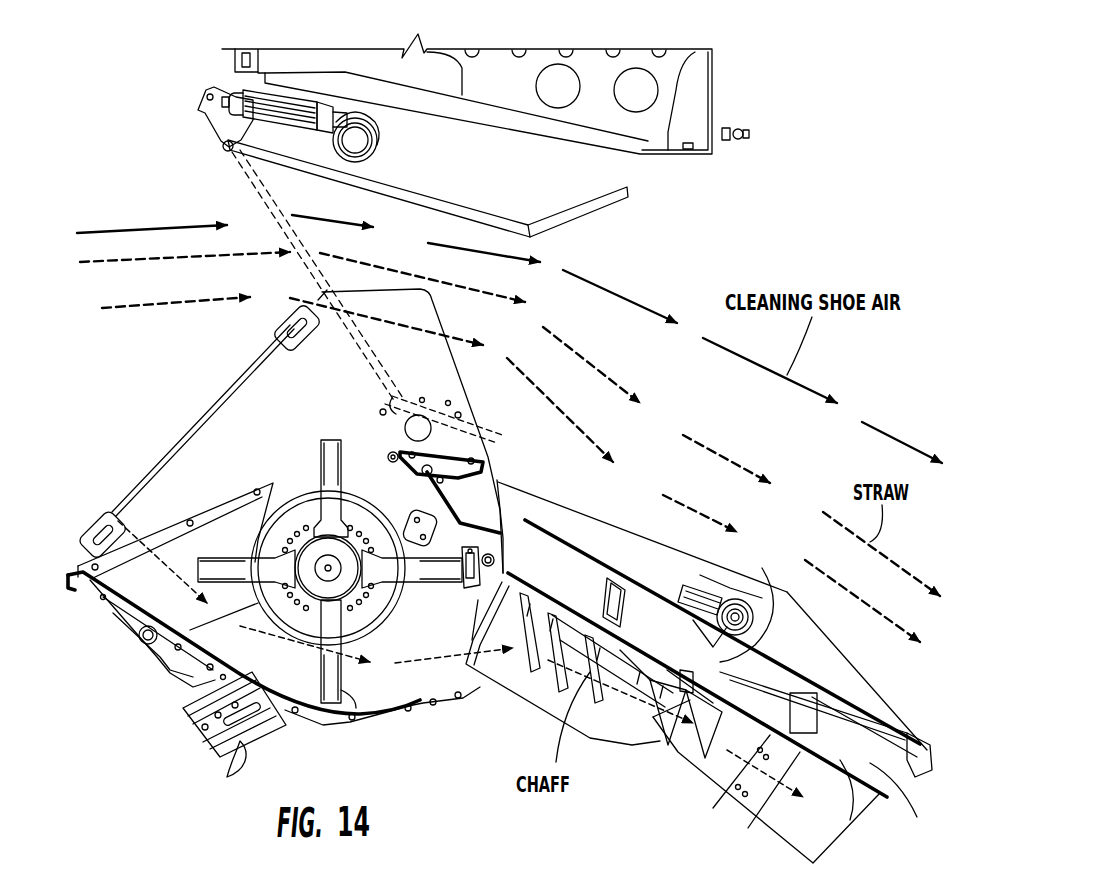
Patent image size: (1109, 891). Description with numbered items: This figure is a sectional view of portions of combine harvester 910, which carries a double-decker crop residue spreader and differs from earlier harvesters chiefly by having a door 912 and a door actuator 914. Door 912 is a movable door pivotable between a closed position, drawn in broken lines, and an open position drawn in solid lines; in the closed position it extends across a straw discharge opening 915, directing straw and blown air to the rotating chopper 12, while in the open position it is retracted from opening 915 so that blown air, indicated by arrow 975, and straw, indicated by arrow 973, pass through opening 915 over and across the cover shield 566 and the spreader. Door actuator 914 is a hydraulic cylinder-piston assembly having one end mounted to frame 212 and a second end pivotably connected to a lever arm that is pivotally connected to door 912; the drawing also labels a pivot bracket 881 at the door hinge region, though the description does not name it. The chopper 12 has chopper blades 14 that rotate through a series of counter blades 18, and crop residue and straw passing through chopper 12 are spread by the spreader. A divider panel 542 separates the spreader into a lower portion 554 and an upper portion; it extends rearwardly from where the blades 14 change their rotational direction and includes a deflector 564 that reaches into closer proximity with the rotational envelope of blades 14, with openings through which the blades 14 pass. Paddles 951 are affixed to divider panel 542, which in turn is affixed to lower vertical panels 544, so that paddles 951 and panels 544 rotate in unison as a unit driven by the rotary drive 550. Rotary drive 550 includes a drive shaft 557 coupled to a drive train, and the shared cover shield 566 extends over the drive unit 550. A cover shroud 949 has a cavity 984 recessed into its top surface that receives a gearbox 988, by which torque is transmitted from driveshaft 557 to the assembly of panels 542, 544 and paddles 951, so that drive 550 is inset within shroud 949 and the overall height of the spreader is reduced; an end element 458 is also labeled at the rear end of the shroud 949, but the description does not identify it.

The combine harvester 910 is at (183, 40).
The door actuator 914 is at (257, 93).
The pivot bracket 881 is at (217, 110).
The door 912 is at (258, 220).
The frame 212 is at (380, 154).
The straw discharge opening 915 is at (398, 240).
The arrow (straw flow) 973 is at (177, 306).
The arrow (blown air flow) 975 is at (900, 436).
The rotating chopper 12 is at (317, 450).
The chopper blades 14 is at (337, 693).
The counter blades 18 is at (229, 773).
The deflector 564 is at (460, 665).
The cavity 984 is at (667, 630).
The gearbox 988 is at (693, 620).
The rotary drive 550 is at (723, 603).
The drive shaft 557 is at (772, 612).
The cover shield 566 is at (817, 622).
The cover shroud 949 is at (902, 730).
The end plate 458 is at (920, 780).
The paddles 951 is at (867, 762).
The divider panel 542 is at (876, 793).
The vertical panels 544 is at (760, 825).
The lower portion 554 is at (835, 853).